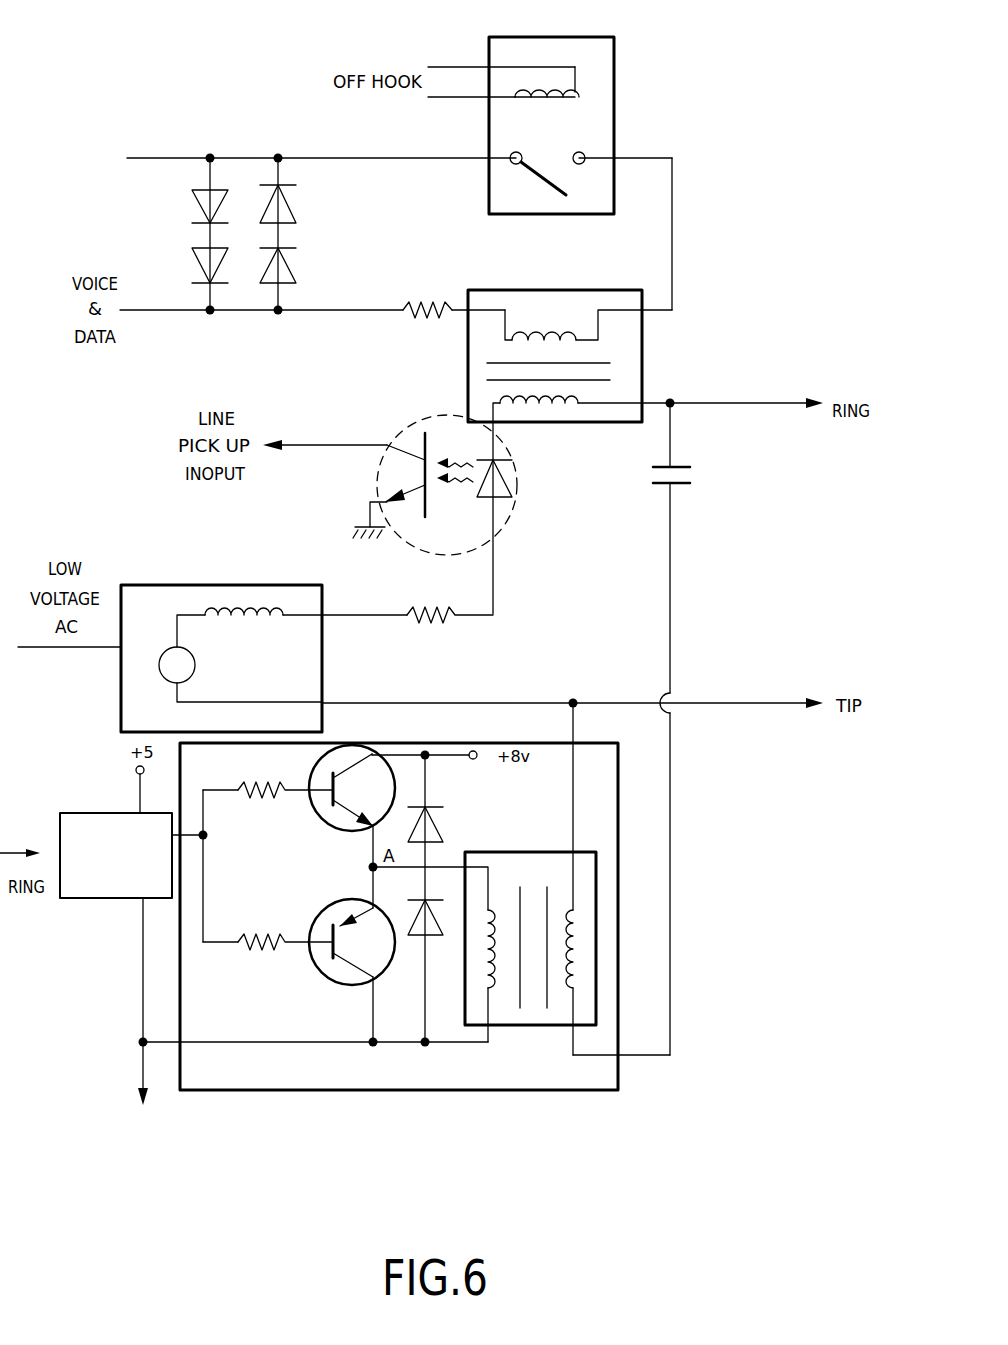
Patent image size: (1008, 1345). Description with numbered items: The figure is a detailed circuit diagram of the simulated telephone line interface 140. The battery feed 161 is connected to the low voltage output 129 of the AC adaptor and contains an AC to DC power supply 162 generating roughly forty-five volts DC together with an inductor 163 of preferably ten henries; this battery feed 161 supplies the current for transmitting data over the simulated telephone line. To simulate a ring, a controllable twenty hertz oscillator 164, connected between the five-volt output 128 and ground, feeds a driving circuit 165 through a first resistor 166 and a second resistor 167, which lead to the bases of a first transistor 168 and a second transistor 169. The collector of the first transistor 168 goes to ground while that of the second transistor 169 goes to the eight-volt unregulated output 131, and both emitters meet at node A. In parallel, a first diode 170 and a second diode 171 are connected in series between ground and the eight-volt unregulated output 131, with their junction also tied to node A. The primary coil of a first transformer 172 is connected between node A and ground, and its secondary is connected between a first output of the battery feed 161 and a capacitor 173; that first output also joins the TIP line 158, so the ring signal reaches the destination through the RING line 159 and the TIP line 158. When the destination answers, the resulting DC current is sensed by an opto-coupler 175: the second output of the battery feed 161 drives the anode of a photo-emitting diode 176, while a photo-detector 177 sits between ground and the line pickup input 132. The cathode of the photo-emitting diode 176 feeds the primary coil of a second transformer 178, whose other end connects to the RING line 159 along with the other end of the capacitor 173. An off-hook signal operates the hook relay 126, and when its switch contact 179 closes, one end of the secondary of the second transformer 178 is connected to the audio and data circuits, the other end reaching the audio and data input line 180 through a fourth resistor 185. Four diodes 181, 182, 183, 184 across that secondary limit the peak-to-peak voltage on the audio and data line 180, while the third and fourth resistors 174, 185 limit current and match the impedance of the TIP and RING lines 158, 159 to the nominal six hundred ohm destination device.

The hook relay 126 is at (614, 48).
The switch contact 179 is at (537, 165).
The simulated telephone line interface 140 is at (745, 218).
The diode 181 is at (197, 204).
The diode 182 is at (197, 262).
The diode 183 is at (294, 202).
The diode 184 is at (294, 265).
The fourth resistor 185 is at (430, 305).
The audio and data input line 180 is at (330, 312).
The second transformer 178 is at (642, 347).
The line pickup input 132 is at (337, 445).
The photo-emitting diode 176 is at (512, 478).
The photo-detector 177 is at (428, 498).
The opto-coupler 175 is at (505, 522).
The RING line 159 is at (745, 403).
The capacitor 173 is at (690, 487).
The battery feed 161 is at (212, 585).
The inductor 163 is at (228, 620).
The AC to DC power supply 162 is at (193, 676).
The third resistor 174 is at (420, 618).
The low voltage output 129 is at (78, 647).
The TIP line 158 is at (731, 706).
The +5V output 128 is at (136, 792).
The +8V unregulated output 131 is at (458, 762).
The second diode 171 is at (441, 823).
The first diode 170 is at (410, 936).
The second resistor 167 is at (246, 794).
The first resistor 166 is at (246, 946).
The second transistor 169 is at (325, 828).
The first transistor 168 is at (322, 983).
The first transformer 172 is at (528, 1025).
The controllable 20 Hz oscillator 164 is at (92, 898).
The driving circuit 165 is at (430, 1092).